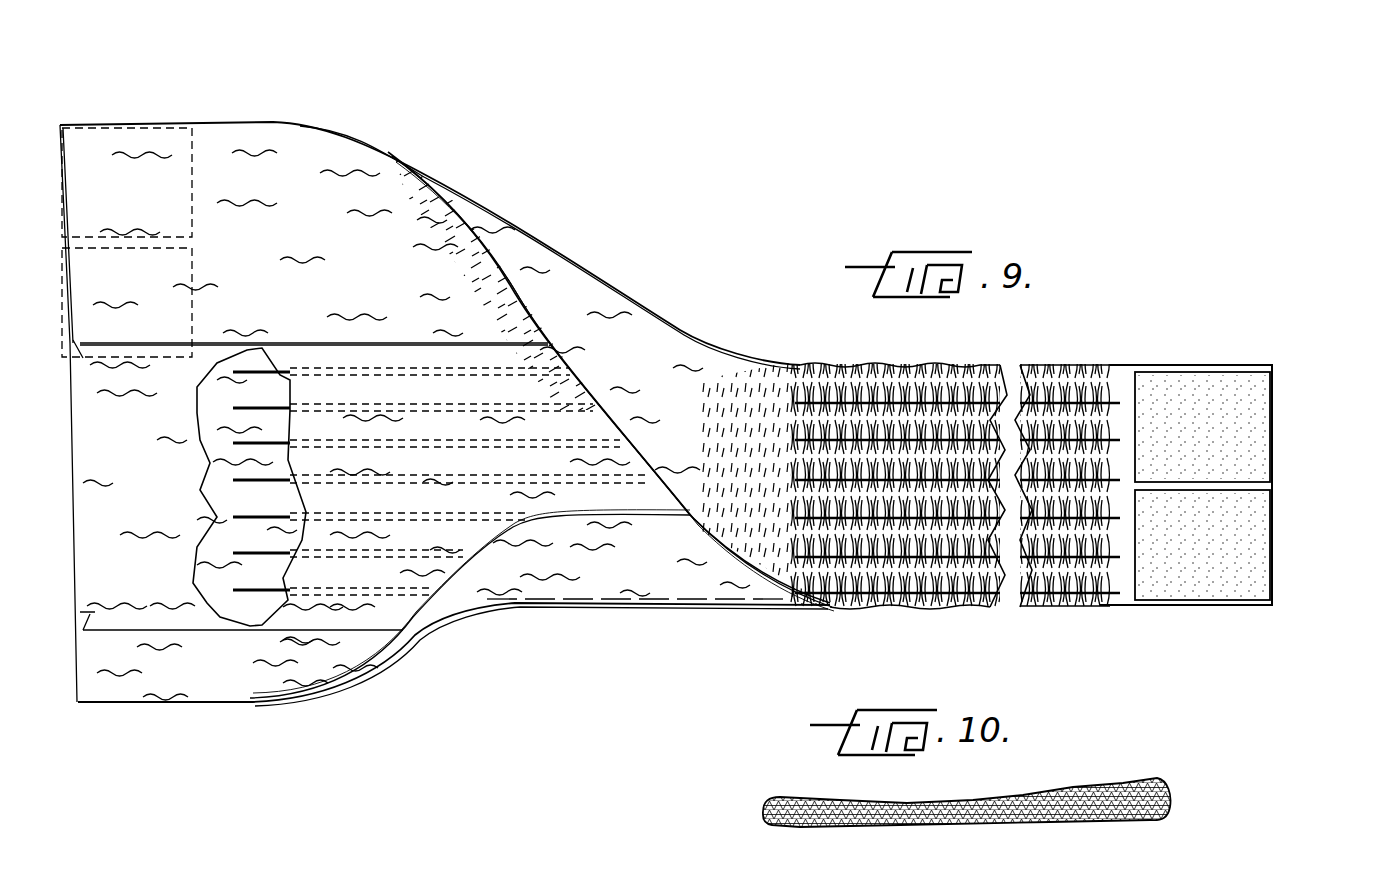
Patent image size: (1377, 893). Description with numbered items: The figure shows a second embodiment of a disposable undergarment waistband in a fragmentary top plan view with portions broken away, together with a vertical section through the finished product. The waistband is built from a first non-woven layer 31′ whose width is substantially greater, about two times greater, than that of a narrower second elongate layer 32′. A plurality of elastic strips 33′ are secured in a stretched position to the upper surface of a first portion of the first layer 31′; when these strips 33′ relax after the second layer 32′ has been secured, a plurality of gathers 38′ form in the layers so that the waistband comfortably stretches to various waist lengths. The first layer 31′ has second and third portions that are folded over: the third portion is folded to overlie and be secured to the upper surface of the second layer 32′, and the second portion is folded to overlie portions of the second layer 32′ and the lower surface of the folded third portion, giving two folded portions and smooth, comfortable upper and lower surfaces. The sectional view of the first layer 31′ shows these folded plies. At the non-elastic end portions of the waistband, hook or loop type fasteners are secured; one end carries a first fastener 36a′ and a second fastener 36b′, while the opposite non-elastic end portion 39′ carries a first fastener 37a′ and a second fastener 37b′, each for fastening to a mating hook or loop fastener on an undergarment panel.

In FIG. 9, the first layer 31′ is at (365, 175).
In FIG. 10, the first layer 31′ is at (1033, 795).
In FIG. 9, the second layer 32′ is at (93, 613).
In FIG. 9, the elastic strips 33′ is at (268, 555).
In FIG. 9, the first fastener 36a′ is at (152, 135).
In FIG. 9, the second fastener 36b′ is at (180, 272).
In FIG. 9, the first fastener 37a′ is at (1258, 405).
In FIG. 9, the second fastener 37b′ is at (1258, 540).
In FIG. 9, the gathers 38′ is at (860, 430).
In FIG. 9, the end portion 39′ is at (1243, 605).